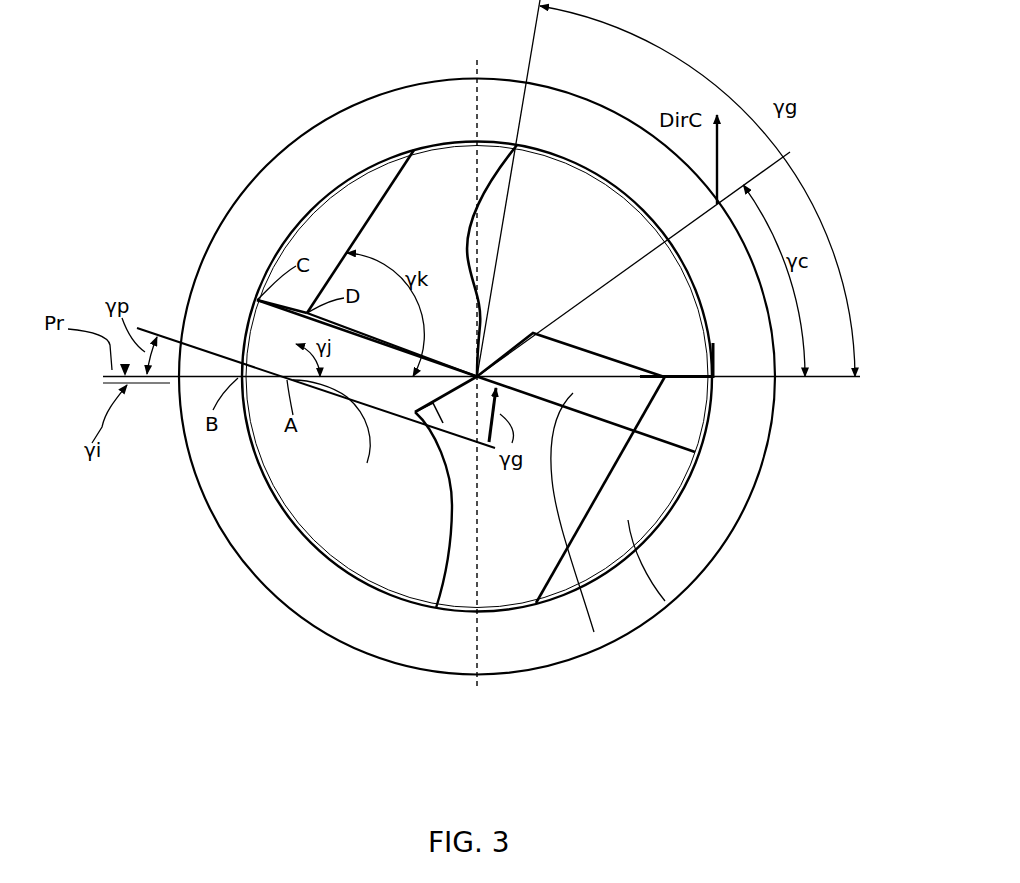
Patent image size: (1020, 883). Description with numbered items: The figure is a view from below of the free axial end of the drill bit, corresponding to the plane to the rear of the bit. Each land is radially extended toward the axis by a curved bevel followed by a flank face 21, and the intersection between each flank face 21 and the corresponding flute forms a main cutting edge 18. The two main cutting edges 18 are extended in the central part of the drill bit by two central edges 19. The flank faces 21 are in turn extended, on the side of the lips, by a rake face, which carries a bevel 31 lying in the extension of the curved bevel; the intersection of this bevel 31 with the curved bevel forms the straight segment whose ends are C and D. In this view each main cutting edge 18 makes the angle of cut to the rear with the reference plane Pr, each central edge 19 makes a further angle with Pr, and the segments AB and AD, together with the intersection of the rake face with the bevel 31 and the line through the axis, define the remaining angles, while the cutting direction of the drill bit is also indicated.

The main cutting edge 18 is at (367, 463).
The central edge 19 is at (247, 330).
The flank face 21 is at (594, 632).
The bevel 31 is at (665, 601).